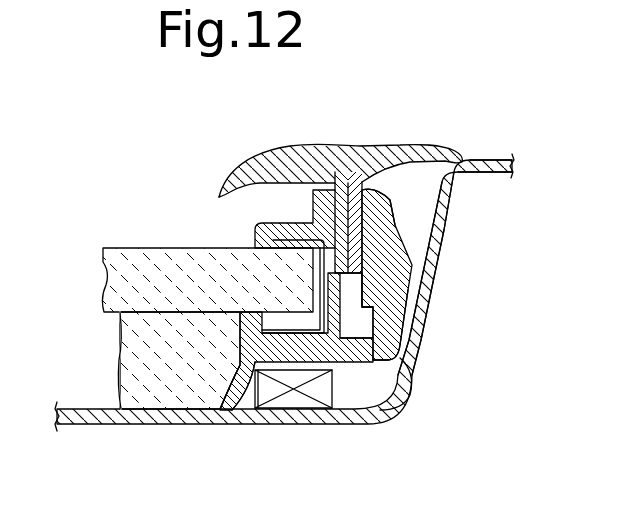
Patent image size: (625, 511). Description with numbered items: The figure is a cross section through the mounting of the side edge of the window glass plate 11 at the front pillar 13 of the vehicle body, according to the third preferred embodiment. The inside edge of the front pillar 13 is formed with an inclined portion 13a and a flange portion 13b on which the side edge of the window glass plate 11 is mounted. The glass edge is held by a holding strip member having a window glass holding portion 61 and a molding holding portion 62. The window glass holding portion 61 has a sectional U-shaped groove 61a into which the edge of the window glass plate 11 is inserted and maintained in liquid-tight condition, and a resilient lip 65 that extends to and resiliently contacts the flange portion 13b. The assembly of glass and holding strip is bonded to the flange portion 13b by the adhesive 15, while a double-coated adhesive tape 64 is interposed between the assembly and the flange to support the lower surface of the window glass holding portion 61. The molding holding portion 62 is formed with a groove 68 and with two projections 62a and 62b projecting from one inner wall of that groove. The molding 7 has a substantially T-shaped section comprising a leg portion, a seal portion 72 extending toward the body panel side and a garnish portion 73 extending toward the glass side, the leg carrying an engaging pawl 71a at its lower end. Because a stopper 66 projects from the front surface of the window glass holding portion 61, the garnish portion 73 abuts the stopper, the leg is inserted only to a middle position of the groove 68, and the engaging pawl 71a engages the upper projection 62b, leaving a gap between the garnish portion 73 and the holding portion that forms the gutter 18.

The molding 7 is at (341, 99).
The window glass plate 11 is at (104, 272).
The front pillar 13 is at (487, 160).
The inclined portion 13a is at (446, 215).
The flange portion 13b is at (144, 425).
The adhesive 15 is at (147, 360).
The gutter 18 is at (258, 210).
The window glass holding portion 61 is at (383, 405).
The U-shaped groove 61a is at (260, 364).
The molding holding portion 62 is at (388, 240).
The projection 62a is at (418, 328).
The upper projection 62b is at (370, 238).
The double-coated adhesive tape 64 is at (293, 400).
The resilient lip 65 is at (222, 411).
The stopper 66 is at (362, 157).
The groove 68 is at (412, 362).
The engaging pawl 71a is at (385, 275).
The seal portion 72 is at (428, 150).
The garnish portion 73 is at (290, 154).